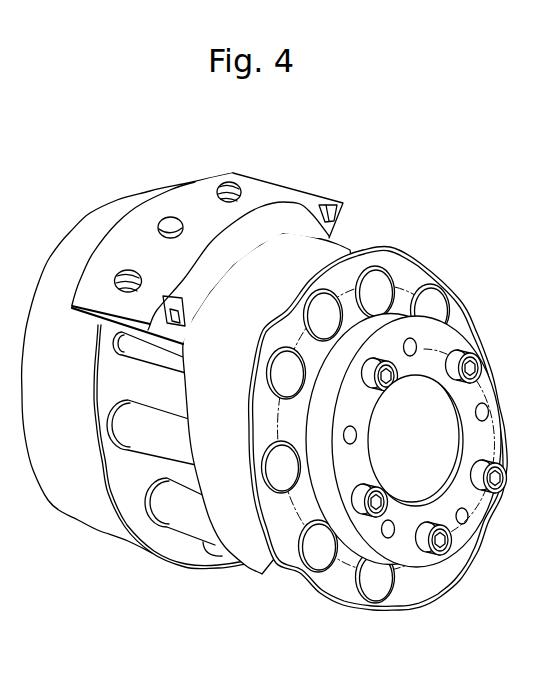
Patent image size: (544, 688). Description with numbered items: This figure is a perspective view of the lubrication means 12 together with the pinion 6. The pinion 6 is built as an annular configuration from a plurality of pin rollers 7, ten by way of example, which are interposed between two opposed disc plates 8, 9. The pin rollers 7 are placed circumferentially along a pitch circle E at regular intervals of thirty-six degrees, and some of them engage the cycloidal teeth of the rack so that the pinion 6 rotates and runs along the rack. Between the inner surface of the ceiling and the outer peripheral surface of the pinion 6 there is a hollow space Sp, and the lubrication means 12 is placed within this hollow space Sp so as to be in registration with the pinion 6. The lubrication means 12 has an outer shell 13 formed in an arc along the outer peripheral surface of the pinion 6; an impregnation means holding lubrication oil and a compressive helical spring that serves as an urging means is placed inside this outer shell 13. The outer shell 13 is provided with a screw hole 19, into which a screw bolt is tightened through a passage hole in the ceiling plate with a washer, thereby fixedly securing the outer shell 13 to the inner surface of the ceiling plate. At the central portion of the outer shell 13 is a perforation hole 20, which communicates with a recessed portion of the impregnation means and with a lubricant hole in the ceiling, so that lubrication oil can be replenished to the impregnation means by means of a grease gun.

The pinion 6 is at (146, 560).
The pin rollers 7 is at (165, 447).
The disc plate 8 is at (78, 487).
The disc plate 9 is at (258, 538).
The lubrication means 12 is at (286, 181).
The outer shell 13 is at (205, 187).
The screw hole 19 is at (130, 273).
The perforation hole 20 is at (177, 217).
The hollow space Sp is at (108, 328).
The pitch circle E is at (297, 535).